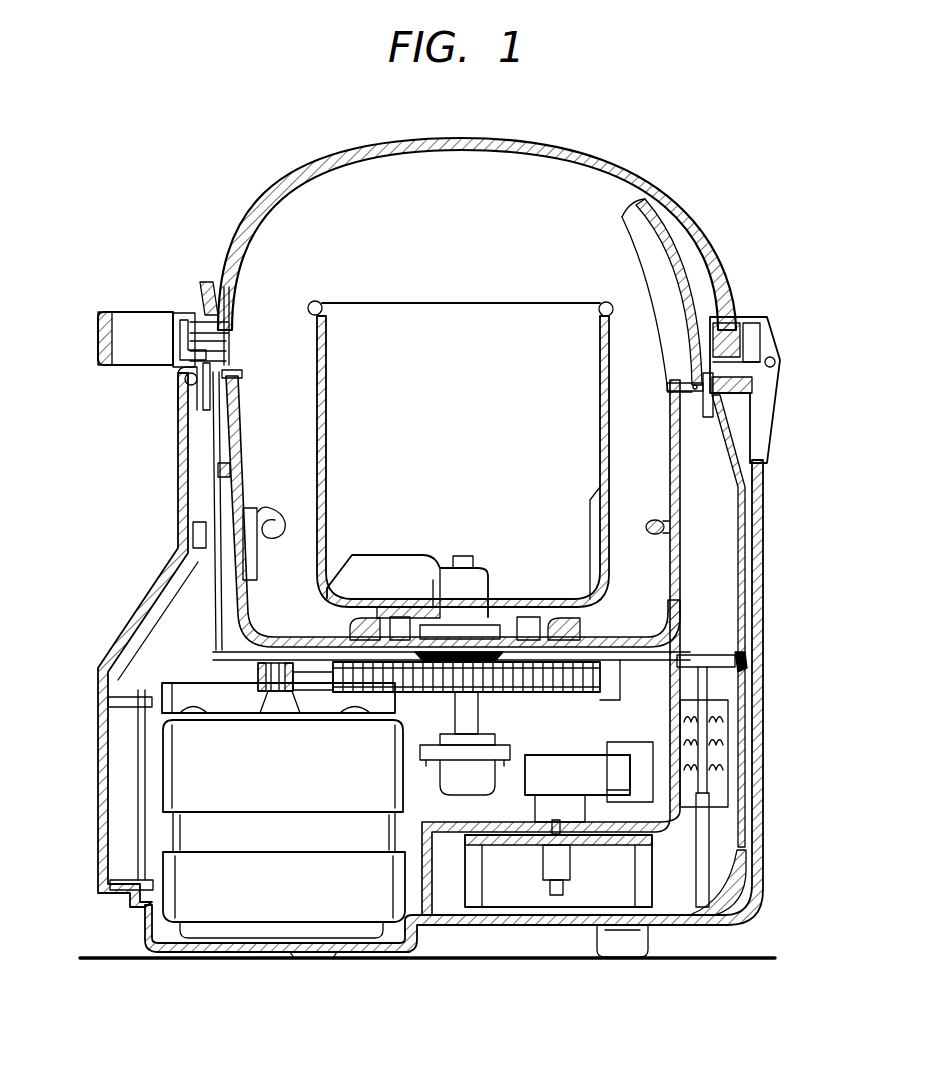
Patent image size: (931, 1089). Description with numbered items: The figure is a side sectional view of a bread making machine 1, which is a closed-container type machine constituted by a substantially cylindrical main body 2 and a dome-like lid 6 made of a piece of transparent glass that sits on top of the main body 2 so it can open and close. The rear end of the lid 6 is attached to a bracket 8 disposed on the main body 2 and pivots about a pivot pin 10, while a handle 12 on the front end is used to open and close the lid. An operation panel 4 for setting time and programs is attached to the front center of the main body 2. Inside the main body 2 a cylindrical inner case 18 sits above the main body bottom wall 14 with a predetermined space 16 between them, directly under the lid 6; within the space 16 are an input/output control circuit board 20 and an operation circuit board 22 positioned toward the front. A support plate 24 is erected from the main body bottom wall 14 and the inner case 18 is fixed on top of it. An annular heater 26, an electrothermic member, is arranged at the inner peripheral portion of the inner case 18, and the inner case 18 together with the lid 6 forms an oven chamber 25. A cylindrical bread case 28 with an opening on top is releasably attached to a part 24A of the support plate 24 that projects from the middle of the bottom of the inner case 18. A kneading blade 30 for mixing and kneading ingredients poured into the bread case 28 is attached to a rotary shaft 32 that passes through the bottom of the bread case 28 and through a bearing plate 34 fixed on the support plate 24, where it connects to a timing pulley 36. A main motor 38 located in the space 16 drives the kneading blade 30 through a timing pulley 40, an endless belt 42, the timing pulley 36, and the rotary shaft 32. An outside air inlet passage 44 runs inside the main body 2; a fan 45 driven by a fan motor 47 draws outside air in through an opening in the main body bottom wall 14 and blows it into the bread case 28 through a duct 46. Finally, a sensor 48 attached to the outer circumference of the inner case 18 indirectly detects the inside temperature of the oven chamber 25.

The bread making machine 1 is at (680, 186).
The main body 2 is at (762, 507).
The operation panel 4 is at (153, 577).
The lid 6 is at (372, 140).
The bracket 8 is at (770, 388).
The pivot pin 10 is at (775, 362).
The handle 12 is at (135, 325).
The main body bottom wall 14 is at (375, 953).
The space 16 is at (440, 811).
The inner case 18 is at (233, 438).
The input/output control circuit board 20 is at (130, 766).
The operation circuit board 22 is at (157, 623).
The support plate 24 is at (597, 713).
The part of the support plate 24A is at (357, 628).
The oven chamber 25 is at (478, 260).
The annular heater 26 is at (265, 525).
The bread case 28 is at (347, 320).
The kneading blade 30 is at (373, 567).
The rotary shaft 32 is at (467, 557).
The bearing plate 34 is at (490, 625).
The timing pulley 36 is at (532, 700).
The main motor 38 is at (300, 801).
The timing pulley 40 is at (277, 693).
The endless belt 42 is at (320, 685).
The outside air inlet passage 44 is at (557, 925).
The fan 45 is at (510, 897).
The duct 46 is at (673, 262).
The fan motor 47 is at (583, 787).
The sensor 48 is at (230, 473).